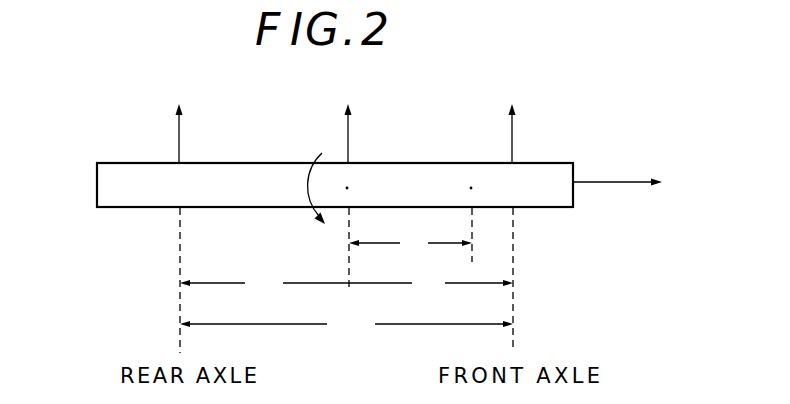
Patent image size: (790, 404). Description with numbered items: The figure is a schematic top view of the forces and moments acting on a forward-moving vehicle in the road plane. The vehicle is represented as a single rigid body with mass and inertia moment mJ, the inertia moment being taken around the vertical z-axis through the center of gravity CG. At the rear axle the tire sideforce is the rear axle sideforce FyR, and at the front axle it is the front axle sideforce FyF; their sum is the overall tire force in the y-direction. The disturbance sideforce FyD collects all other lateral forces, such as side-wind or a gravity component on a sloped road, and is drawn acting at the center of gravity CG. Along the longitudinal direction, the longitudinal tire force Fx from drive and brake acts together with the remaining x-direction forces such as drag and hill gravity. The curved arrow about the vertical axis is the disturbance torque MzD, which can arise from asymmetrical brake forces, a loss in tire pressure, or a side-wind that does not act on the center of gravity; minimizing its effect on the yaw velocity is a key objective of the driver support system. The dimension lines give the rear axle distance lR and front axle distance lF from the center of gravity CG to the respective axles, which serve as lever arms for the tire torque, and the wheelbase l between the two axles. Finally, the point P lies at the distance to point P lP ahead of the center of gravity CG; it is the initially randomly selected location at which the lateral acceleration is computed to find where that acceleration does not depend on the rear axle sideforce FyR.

The vehicle mass and inertia moment mJ is at (335, 185).
The center of gravity CG is at (373, 188).
The point P is at (483, 188).
The rear axle sideforce FyR is at (205, 128).
The disturbance sideforce FyD is at (370, 128).
The front axle sideforce FyF is at (532, 127).
The longitudinal tire force Fx is at (625, 198).
The disturbance torque MzD is at (291, 197).
The distance to point P lP is at (410, 244).
The rear axle distance lR is at (264, 284).
The front axle distance lF is at (431, 284).
The wheelbase l is at (346, 323).